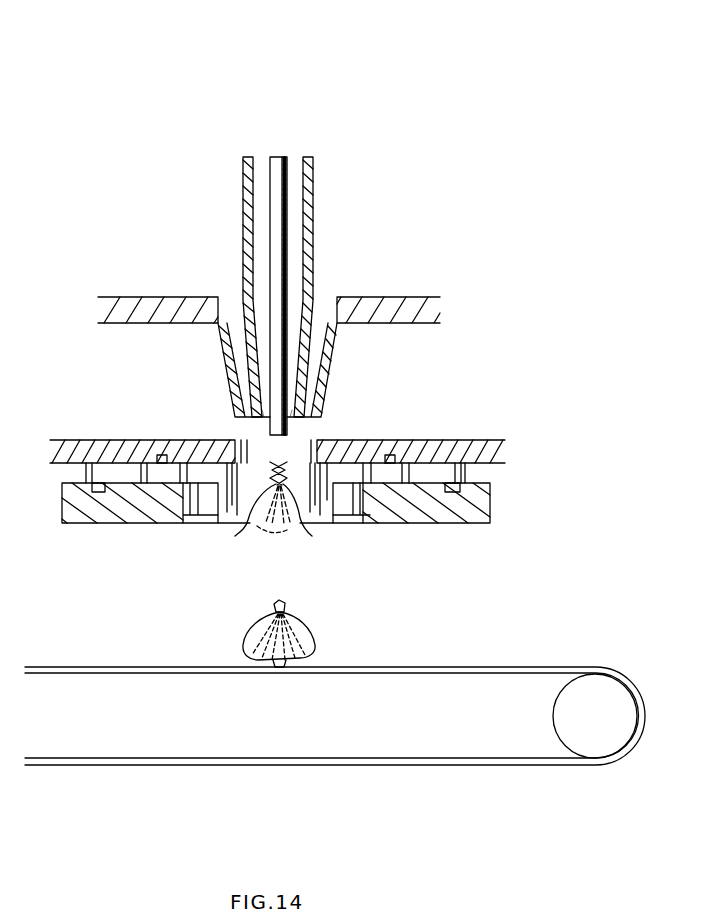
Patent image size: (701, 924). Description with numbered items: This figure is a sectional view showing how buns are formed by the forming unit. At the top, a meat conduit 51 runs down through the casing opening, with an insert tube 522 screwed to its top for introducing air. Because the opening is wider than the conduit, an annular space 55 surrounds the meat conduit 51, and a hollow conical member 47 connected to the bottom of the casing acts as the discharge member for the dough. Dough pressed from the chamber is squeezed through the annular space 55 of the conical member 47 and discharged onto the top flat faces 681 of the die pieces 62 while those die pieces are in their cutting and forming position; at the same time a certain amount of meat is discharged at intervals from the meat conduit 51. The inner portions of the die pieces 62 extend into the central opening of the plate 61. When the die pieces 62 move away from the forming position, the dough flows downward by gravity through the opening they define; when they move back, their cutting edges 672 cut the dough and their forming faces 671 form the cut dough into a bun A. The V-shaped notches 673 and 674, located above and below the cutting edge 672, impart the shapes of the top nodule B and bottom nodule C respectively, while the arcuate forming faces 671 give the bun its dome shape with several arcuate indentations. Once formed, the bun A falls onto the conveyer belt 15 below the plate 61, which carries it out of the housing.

The insert tube 522 is at (277, 270).
The meat conduit 51 is at (304, 347).
The annular space 55 is at (316, 369).
The hollow conical member 47 is at (321, 407).
The top flat face 681 is at (320, 460).
The die piece 62 is at (448, 472).
The plate 61 is at (478, 511).
The V-shaped notch 673 is at (282, 468).
The cutting edge 672 is at (238, 527).
The forming face 671 is at (297, 510).
The V-shaped notch 674 is at (264, 525).
The bun A is at (285, 604).
The top nodule B is at (300, 635).
The bottom nodule C is at (283, 666).
The conveyer belt 15 is at (515, 687).